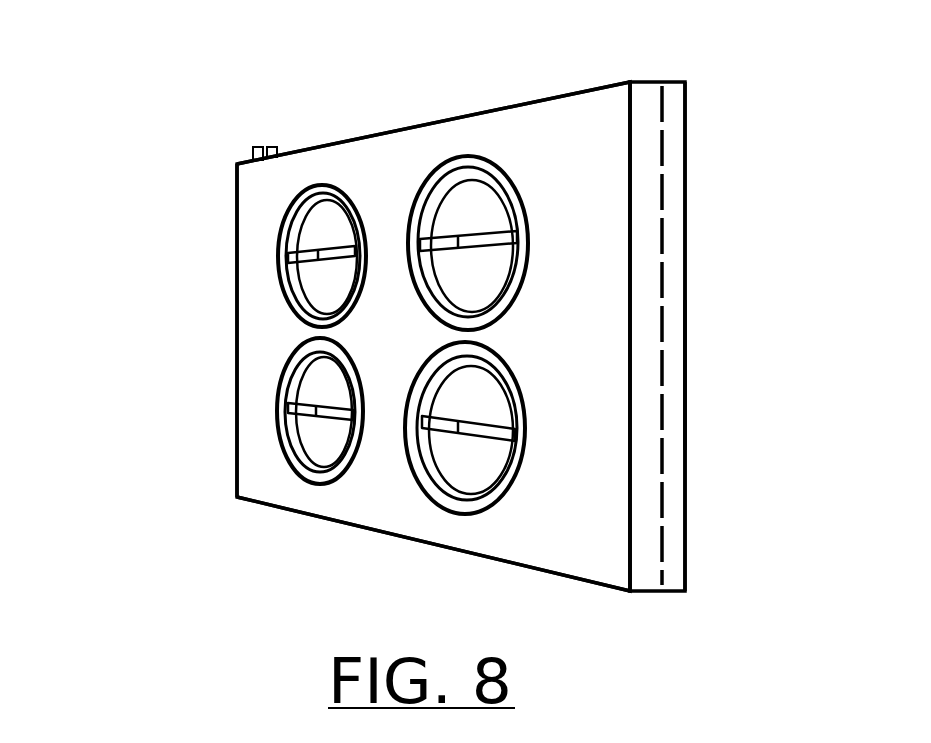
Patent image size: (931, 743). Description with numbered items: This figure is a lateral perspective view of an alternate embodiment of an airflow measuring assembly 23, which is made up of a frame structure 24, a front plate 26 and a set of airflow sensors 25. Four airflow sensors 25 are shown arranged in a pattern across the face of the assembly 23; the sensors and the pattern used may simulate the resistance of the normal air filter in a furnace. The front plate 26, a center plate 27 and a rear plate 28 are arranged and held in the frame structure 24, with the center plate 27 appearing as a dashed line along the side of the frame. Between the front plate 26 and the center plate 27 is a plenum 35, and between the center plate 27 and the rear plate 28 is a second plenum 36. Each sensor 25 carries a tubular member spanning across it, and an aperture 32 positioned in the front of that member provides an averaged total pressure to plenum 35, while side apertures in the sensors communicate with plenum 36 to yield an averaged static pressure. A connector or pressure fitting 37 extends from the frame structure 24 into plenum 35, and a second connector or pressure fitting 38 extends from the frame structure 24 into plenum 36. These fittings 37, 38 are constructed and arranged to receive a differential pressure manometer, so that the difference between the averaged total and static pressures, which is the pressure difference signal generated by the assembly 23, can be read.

The airflow measuring assembly 23 is at (203, 193).
The frame structure 24 is at (237, 265).
The airflow sensor 25 is at (373, 558).
The front plate 26 is at (262, 337).
The center plate 27 is at (662, 223).
The rear plate 28 is at (688, 366).
The aperture 32 is at (318, 410).
The plenum 35 is at (645, 92).
The plenum 36 is at (677, 88).
The connector or pressure fitting 37 is at (253, 147).
The connector or pressure fitting 38 is at (277, 148).